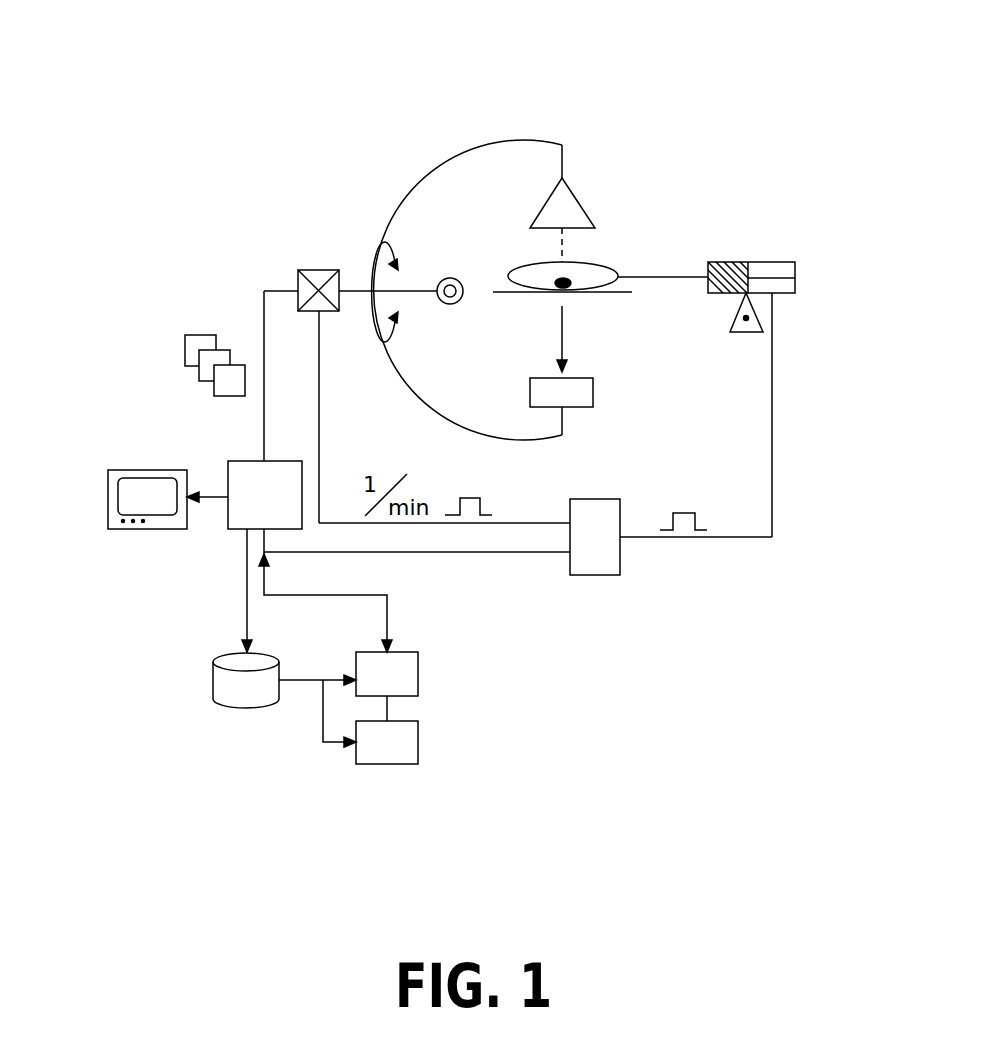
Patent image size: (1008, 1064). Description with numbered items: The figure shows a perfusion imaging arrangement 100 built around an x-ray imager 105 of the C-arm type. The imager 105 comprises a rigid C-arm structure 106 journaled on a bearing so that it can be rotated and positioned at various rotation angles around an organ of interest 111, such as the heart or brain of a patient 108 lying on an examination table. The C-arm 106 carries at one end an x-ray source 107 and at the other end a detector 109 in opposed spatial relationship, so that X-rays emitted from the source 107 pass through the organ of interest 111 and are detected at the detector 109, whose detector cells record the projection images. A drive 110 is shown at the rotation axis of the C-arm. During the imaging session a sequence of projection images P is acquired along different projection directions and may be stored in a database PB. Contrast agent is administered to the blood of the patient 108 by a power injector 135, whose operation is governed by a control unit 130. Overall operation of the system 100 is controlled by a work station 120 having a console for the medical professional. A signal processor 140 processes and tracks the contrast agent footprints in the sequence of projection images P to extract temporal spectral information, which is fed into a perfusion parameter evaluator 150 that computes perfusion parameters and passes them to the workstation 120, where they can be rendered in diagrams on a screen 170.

The perfusion imaging arrangement 100 is at (357, 82).
The x-ray imager 105 is at (487, 222).
The rigid C-arm structure 106 is at (525, 272).
The x-ray source 107 is at (575, 208).
The patient 108 is at (600, 272).
The detector 109 is at (585, 395).
The gantry drive motor 110 is at (325, 270).
The organ of interest 111 is at (557, 287).
The work station 120 is at (235, 513).
The control unit 130 is at (612, 576).
The power injector 135 is at (775, 262).
The signal processor 140 is at (410, 675).
The perfusion parameter evaluator 150 is at (410, 742).
The screen 170 is at (133, 470).
The sequence of x-ray projection images P is at (210, 335).
The parameter database PB is at (231, 698).